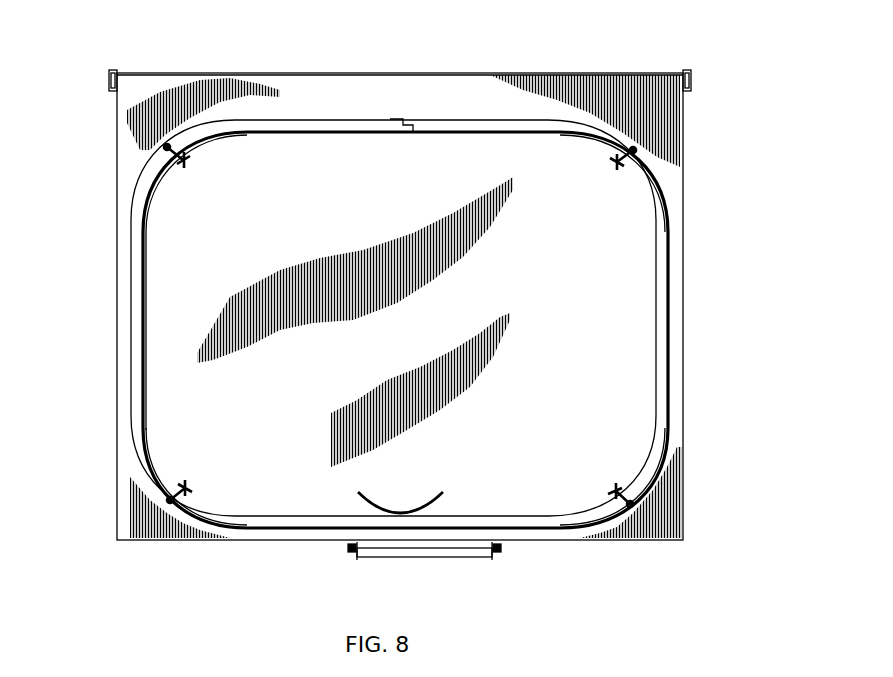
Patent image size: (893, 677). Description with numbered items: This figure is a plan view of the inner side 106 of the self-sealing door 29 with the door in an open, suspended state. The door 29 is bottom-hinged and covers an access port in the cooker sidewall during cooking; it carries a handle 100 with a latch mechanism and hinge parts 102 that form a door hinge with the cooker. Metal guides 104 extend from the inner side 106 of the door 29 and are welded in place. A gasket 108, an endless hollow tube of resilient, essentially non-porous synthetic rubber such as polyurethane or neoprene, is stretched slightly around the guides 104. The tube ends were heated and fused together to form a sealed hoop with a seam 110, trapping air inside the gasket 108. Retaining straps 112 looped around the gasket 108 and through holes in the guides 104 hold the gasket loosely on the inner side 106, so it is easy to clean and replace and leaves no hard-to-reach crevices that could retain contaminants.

The door 29 is at (97, 324).
The handle 100 is at (457, 558).
The hinge parts 102 is at (108, 80).
The metal guides 104 is at (573, 135).
The inner side 106 is at (362, 80).
The gasket 108 is at (312, 125).
The seam 110 is at (423, 128).
The retaining straps 112 is at (187, 160).